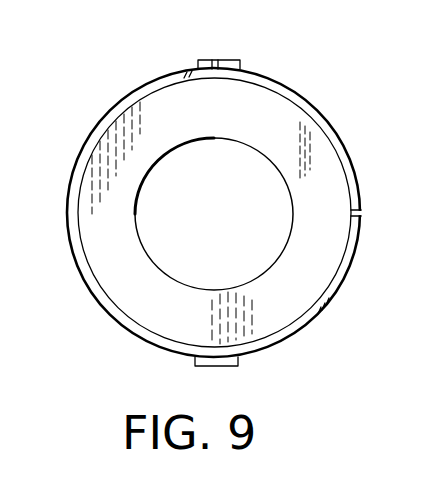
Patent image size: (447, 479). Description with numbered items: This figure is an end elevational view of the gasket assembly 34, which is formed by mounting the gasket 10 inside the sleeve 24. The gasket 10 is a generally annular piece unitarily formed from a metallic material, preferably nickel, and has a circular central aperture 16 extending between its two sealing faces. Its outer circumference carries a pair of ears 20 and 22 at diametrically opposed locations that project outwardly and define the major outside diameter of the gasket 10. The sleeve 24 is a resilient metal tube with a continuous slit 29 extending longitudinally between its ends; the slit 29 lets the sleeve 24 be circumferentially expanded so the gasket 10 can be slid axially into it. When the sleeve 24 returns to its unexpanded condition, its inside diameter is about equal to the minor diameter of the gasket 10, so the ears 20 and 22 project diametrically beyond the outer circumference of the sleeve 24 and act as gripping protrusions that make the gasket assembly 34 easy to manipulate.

The gasket 10 is at (332, 142).
The central aperture 16 is at (170, 142).
The ear 20 is at (226, 366).
The ear 22 is at (218, 60).
The sleeve 24 is at (104, 108).
The slit 29 is at (362, 213).
The gasket assembly 34 is at (318, 71).